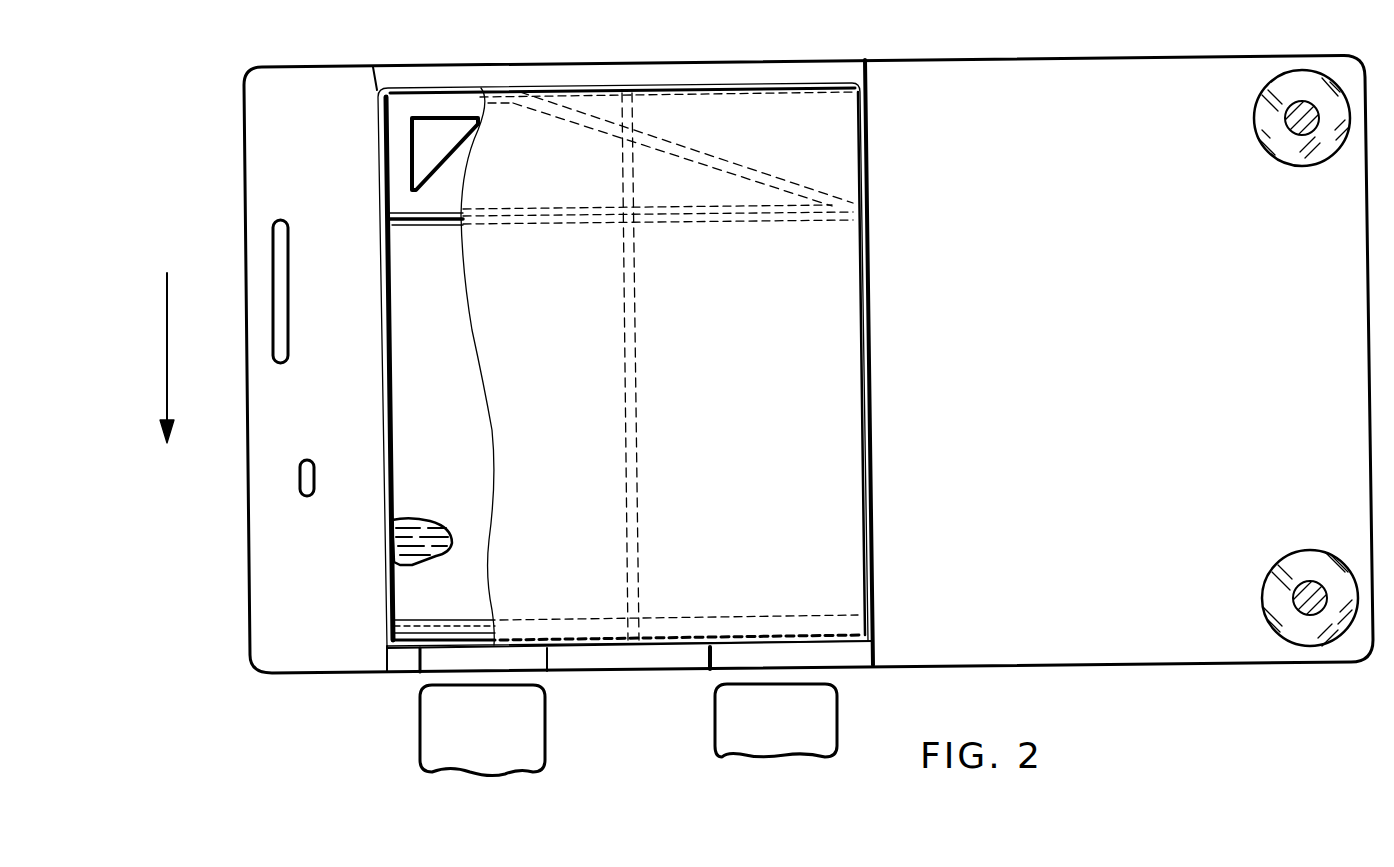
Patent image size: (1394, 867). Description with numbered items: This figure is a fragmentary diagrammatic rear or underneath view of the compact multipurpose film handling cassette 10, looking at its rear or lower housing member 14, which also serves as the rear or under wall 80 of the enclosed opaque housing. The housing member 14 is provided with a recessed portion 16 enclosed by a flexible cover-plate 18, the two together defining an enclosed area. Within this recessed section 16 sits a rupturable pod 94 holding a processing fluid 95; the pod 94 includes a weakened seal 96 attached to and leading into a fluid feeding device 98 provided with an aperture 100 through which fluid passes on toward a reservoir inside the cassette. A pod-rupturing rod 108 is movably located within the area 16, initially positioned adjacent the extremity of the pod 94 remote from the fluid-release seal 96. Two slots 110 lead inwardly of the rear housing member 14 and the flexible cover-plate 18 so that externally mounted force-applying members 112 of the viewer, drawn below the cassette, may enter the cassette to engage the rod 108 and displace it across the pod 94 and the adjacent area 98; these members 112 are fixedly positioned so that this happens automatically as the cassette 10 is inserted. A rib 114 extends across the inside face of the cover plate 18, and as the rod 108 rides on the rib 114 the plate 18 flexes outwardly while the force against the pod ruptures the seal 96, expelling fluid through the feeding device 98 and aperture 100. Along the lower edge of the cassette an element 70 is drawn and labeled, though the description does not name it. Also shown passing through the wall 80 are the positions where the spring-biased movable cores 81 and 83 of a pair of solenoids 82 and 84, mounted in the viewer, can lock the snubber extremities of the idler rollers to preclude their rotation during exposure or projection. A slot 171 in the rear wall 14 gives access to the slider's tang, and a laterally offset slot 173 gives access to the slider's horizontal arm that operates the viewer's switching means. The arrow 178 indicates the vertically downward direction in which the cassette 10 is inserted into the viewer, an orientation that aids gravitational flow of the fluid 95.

The film handling cassette 10 is at (797, 56).
The rear housing member 14 is at (335, 425).
The recessed portion 16 is at (402, 316).
The flexible cover-plate 18 is at (560, 396).
The rail 70 is at (571, 674).
The rear wall 80 is at (1264, 72).
The movable core 81 is at (1310, 617).
The solenoid 82 is at (1306, 552).
The movable core 83 is at (1304, 102).
The solenoid 84 is at (1276, 160).
The rupturable pod 94 is at (454, 478).
The processing fluid 95 is at (418, 520).
The weakened seal 96 is at (427, 228).
The fluid feeding device 98 is at (445, 192).
The aperture 100 is at (410, 136).
The pod-rupturing rod 108 is at (432, 630).
The slots 110 is at (428, 672).
The force-applying members 112 is at (494, 727).
The rib 114 is at (636, 394).
The slot 171 is at (306, 480).
The slot 173 is at (286, 256).
The arrow 178 is at (166, 360).